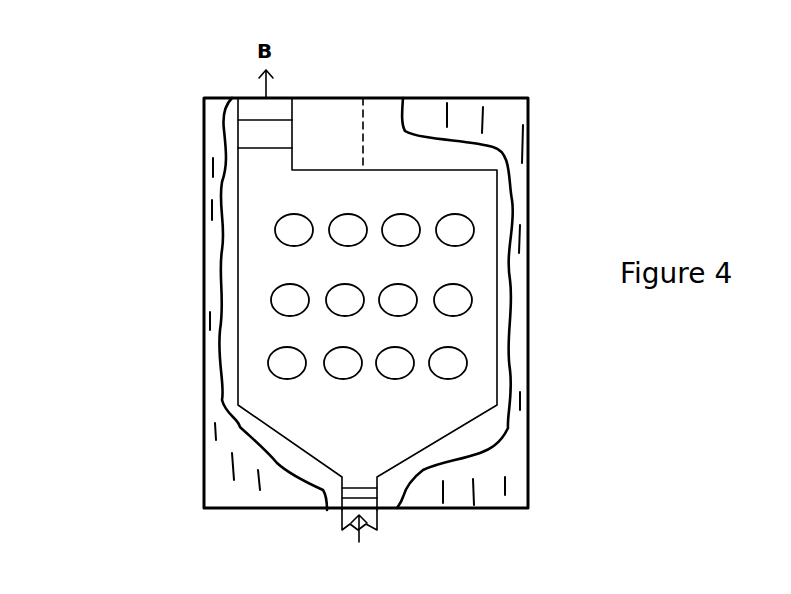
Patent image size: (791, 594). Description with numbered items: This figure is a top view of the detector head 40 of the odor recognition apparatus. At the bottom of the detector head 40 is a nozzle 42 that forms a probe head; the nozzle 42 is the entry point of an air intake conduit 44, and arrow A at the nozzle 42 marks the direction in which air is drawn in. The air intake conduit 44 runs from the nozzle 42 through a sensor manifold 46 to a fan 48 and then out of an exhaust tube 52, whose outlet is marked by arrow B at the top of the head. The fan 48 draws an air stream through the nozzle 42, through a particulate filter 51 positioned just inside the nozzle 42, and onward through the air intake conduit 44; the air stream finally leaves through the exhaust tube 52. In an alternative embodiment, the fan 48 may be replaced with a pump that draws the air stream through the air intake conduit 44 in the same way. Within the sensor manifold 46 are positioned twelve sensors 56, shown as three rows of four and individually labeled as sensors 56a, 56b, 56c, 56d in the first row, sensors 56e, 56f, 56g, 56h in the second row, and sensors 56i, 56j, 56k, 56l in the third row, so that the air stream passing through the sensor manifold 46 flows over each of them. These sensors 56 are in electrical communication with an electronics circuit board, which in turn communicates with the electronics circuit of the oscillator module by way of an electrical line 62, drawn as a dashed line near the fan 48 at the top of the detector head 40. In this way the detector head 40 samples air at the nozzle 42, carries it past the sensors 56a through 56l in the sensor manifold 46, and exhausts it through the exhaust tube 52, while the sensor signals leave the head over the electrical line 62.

The detector head 40 is at (203, 395).
The nozzle 42 is at (338, 515).
The air intake conduit 44 is at (408, 440).
The sensor manifold 46 is at (473, 327).
The fan 48 is at (280, 130).
The particulate filter 51 is at (357, 490).
The exhaust tube 52 is at (276, 105).
The sensors 56 is at (248, 358).
The sensor 56a is at (292, 222).
The sensor 56b is at (347, 222).
The sensor 56c is at (400, 222).
The sensor 56d is at (454, 222).
The sensor 56e is at (289, 293).
The sensor 56f is at (344, 293).
The sensor 56g is at (397, 293).
The sensor 56h is at (452, 293).
The sensor 56i is at (278, 358).
The sensor 56j is at (334, 358).
The sensor 56k is at (386, 361).
The sensor 56l is at (444, 356).
The electrical line 62 is at (365, 117).